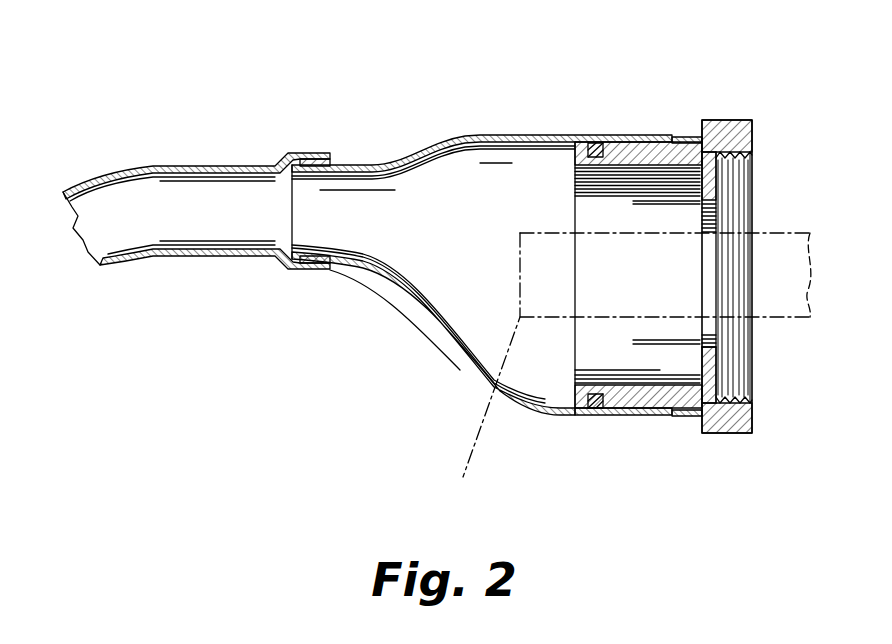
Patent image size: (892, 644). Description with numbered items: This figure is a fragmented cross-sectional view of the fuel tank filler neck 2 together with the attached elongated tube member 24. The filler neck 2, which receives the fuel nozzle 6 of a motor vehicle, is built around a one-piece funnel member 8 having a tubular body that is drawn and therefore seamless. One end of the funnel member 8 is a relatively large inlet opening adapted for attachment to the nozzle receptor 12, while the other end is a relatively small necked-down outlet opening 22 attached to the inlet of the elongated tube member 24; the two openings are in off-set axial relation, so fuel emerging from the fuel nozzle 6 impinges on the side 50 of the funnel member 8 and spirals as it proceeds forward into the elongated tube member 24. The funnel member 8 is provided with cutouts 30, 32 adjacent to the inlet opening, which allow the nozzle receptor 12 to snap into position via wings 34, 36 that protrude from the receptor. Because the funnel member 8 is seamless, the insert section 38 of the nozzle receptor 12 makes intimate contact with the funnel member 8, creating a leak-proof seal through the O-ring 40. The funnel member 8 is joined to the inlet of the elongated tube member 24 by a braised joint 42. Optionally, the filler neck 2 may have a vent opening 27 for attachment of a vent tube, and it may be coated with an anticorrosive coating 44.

The fuel tank filler neck 2 is at (405, 440).
The fuel nozzle 6 is at (463, 477).
The funnel member 8 is at (525, 135).
The nozzle receptor 12 is at (720, 433).
The outlet opening 22 is at (316, 272).
The elongated tube member 24 is at (205, 256).
The vent opening 27 is at (532, 406).
The cutout 30 is at (666, 414).
The cutout 32 is at (672, 135).
The wing 34 is at (658, 418).
The wing 36 is at (660, 135).
The insert section 38 is at (617, 415).
The O-ring 40 is at (597, 140).
The braised joint 42 is at (315, 158).
The anticorrosive coating 44 is at (566, 135).
The side of funnel member 50 is at (432, 318).